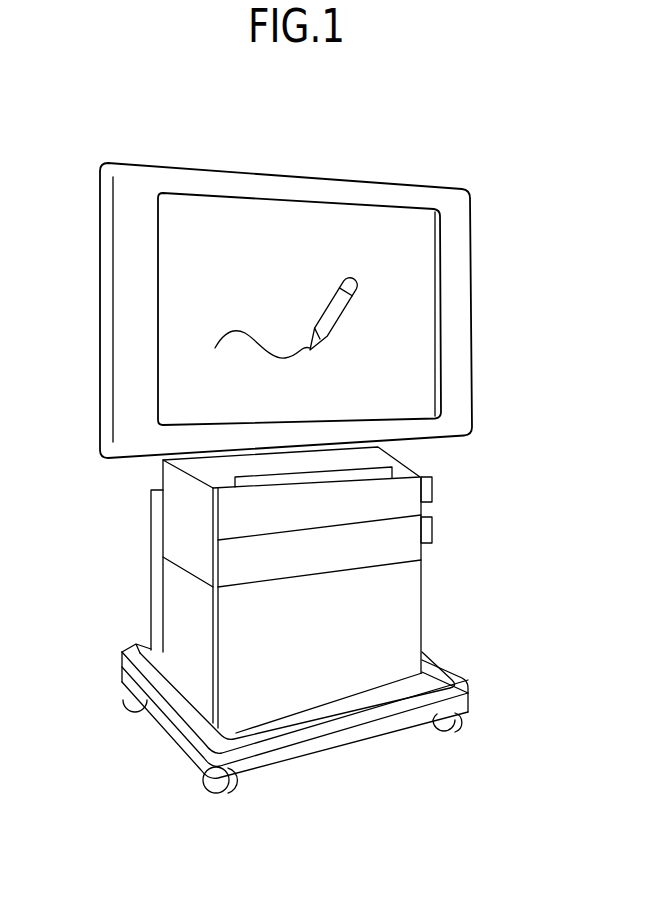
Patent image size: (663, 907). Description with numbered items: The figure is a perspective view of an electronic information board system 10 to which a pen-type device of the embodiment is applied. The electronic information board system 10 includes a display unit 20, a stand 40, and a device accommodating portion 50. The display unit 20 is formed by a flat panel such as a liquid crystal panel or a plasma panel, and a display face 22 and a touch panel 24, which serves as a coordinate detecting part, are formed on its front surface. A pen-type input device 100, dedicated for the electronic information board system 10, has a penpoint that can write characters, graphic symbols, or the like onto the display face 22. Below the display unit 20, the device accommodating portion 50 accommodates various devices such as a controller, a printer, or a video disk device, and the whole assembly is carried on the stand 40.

The electronic information board system 10 is at (318, 119).
The display unit 20 is at (377, 184).
The display face 22 is at (190, 258).
The touch panel 24 is at (443, 238).
The pen-type input device 100 is at (343, 313).
The device accommodating portion 50 is at (423, 607).
The stand 40 is at (157, 724).